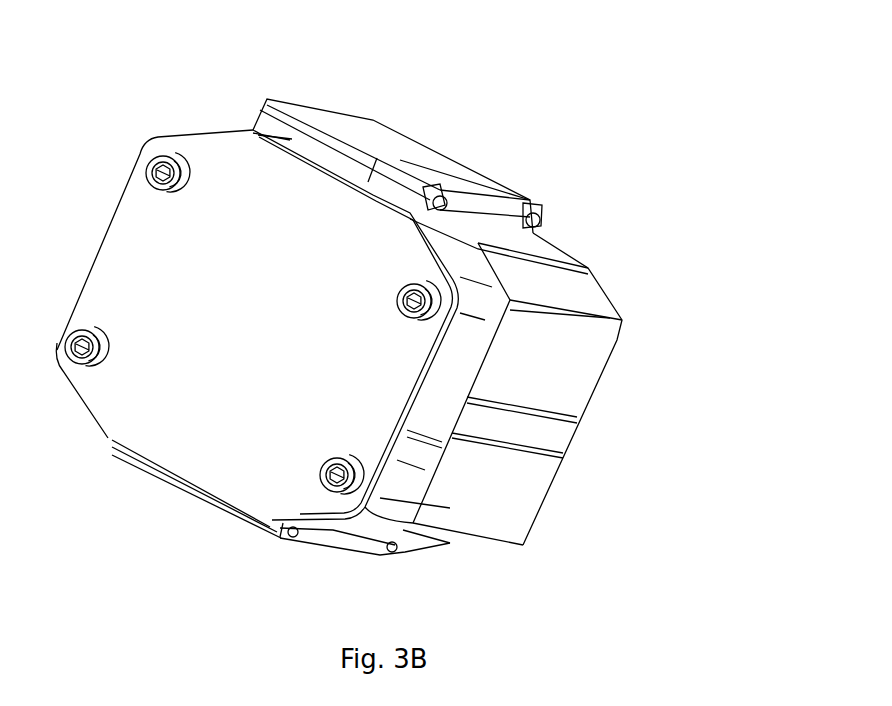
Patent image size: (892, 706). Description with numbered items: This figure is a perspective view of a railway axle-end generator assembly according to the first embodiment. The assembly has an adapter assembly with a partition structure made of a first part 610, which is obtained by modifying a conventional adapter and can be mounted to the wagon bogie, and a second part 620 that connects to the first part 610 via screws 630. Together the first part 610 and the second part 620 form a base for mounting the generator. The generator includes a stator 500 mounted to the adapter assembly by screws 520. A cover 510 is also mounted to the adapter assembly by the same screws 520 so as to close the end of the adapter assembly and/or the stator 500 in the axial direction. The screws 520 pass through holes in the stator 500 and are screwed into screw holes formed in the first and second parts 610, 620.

The stator 500 is at (470, 328).
The cover 510 is at (418, 382).
The screws 520 is at (88, 352).
The first part 610 is at (317, 143).
The second part 620 is at (503, 502).
The screws 630 is at (440, 205).